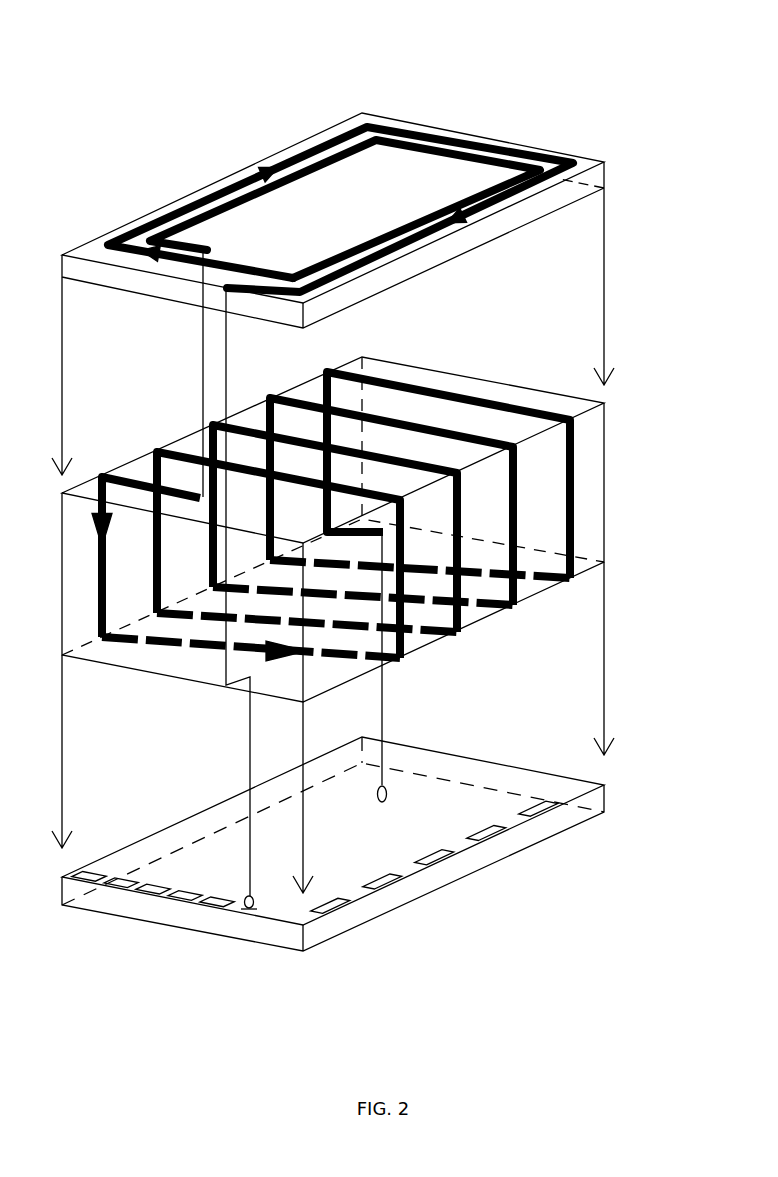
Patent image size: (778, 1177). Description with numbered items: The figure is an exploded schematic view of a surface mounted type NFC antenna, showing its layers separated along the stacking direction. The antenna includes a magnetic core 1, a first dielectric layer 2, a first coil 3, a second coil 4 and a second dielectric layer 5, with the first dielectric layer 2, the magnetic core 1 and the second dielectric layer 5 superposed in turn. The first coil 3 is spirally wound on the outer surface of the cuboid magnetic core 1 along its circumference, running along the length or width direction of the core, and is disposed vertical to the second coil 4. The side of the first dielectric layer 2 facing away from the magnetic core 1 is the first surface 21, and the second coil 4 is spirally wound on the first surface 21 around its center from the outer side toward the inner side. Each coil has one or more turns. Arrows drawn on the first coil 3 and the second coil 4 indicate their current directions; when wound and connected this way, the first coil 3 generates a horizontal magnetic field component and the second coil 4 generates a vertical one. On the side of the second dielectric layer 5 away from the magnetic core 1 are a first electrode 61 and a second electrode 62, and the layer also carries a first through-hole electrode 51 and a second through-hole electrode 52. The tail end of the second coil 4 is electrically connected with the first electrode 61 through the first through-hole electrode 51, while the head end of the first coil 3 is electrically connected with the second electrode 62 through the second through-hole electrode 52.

The magnetic core 1 is at (587, 483).
The first dielectric layer 2 is at (603, 162).
The first surface 21 is at (500, 148).
The first coil 3 is at (520, 493).
The second coil 4 is at (452, 136).
The second dielectric layer 5 is at (362, 857).
The first through-hole electrode 51 is at (276, 932).
The second through-hole electrode 52 is at (540, 840).
The first electrode 61 is at (245, 908).
The second electrode 62 is at (383, 805).